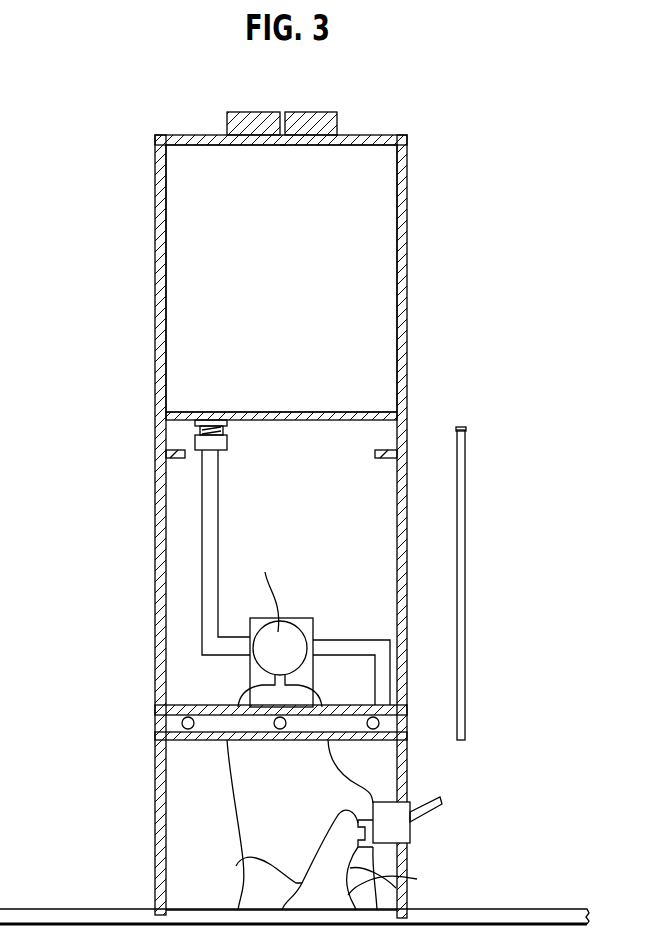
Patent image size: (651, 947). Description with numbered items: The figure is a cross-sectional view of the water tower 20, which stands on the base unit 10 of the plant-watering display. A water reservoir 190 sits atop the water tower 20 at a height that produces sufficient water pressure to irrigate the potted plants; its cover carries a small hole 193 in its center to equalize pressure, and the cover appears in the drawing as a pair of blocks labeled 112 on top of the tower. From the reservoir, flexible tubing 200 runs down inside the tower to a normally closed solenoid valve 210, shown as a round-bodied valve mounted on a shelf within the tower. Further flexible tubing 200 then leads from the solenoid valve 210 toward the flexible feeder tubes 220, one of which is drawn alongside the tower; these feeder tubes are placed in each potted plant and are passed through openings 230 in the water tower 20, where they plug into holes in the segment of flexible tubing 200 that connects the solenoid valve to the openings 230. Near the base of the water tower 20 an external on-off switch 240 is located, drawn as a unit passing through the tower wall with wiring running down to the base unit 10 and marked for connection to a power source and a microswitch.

The base unit 10 is at (556, 918).
The water tower 20 is at (407, 500).
The cap 112 is at (321, 111).
The water reservoir 190 is at (378, 270).
The small hole 193 is at (282, 147).
The flexible tubing 200 is at (218, 475).
The solenoid valve 210 is at (297, 630).
The flexible feeder tubes 220 is at (462, 426).
The openings 230 is at (278, 740).
The external on-off switch 240 is at (440, 808).